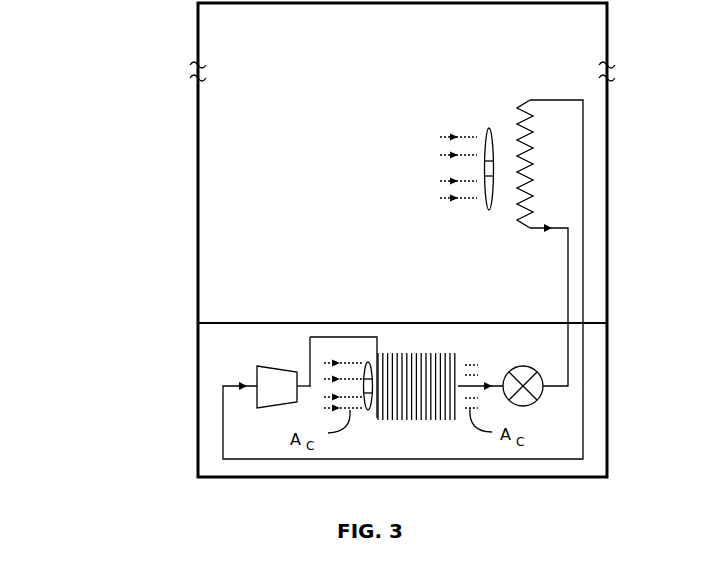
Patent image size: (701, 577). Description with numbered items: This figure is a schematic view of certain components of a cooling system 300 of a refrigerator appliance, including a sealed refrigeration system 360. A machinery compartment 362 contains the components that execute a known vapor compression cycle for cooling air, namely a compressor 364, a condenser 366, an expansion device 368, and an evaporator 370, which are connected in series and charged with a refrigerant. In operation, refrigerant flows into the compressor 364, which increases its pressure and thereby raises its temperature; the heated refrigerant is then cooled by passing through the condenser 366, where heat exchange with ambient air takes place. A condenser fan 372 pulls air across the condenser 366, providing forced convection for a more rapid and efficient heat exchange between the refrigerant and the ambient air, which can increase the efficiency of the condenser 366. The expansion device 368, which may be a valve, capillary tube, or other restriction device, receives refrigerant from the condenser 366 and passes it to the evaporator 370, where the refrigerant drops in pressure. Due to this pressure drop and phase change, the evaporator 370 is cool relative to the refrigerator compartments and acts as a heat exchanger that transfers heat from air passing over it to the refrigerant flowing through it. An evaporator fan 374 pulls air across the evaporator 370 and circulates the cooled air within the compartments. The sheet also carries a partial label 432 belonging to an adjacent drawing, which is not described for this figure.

The cooling system 300 is at (140, 118).
The sealed refrigeration system 360 is at (391, 310).
The machinery compartment 362 is at (228, 355).
The compressor 364 is at (270, 366).
The condenser 366 is at (432, 356).
The expansion device 368 is at (517, 366).
The evaporator 370 is at (518, 130).
The condenser fan 372 is at (365, 365).
The evaporator fan 374 is at (482, 128).
The component of adjacent figure 432 is at (500, 576).